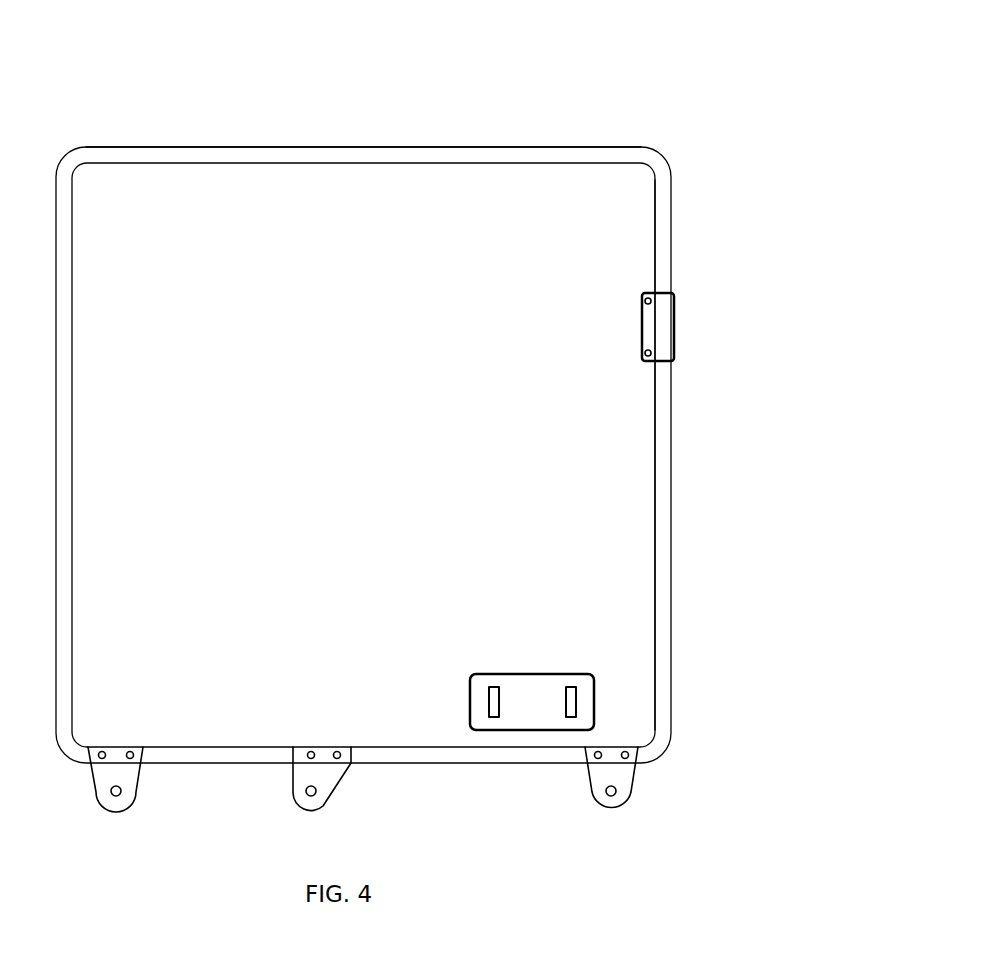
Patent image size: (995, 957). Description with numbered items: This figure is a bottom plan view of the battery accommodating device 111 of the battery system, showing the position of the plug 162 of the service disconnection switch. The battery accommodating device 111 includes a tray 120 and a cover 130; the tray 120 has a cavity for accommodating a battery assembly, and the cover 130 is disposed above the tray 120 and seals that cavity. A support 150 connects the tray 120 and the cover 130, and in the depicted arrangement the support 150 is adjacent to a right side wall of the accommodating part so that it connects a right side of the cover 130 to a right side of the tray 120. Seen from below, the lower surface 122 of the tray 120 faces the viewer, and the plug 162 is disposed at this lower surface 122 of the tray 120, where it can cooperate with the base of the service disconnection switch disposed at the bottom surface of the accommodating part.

The battery accommodating device 111 is at (583, 71).
The cover 130 is at (467, 147).
The tray 120 is at (655, 268).
The lower surface 122 is at (625, 670).
The support 150 is at (674, 325).
The plug 162 is at (503, 730).